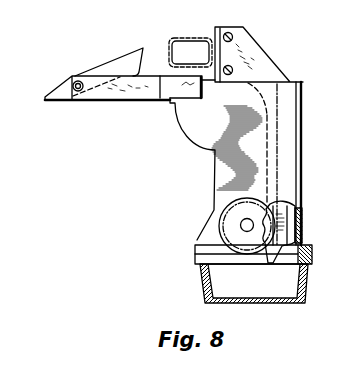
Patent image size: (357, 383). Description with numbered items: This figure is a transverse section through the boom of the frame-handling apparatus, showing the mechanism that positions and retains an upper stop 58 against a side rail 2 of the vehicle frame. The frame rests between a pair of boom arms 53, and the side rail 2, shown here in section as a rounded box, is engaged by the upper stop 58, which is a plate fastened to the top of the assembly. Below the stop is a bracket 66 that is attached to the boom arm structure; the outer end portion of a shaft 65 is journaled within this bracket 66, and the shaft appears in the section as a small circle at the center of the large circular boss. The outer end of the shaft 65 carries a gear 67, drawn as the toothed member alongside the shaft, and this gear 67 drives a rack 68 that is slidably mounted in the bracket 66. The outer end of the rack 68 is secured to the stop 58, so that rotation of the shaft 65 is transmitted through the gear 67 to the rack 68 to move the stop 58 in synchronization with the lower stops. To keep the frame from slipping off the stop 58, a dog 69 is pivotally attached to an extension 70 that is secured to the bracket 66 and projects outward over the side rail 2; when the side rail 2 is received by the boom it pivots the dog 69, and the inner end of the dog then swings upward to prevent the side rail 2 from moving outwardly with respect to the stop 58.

The side rail 2 is at (195, 38).
The arm 53 is at (200, 286).
The upper stop 58 is at (257, 56).
The shaft 65 is at (240, 225).
The bracket 66 is at (217, 142).
The gear 67 is at (295, 205).
The rack 68 is at (290, 224).
The dog 69 is at (131, 57).
The extension 70 is at (142, 96).